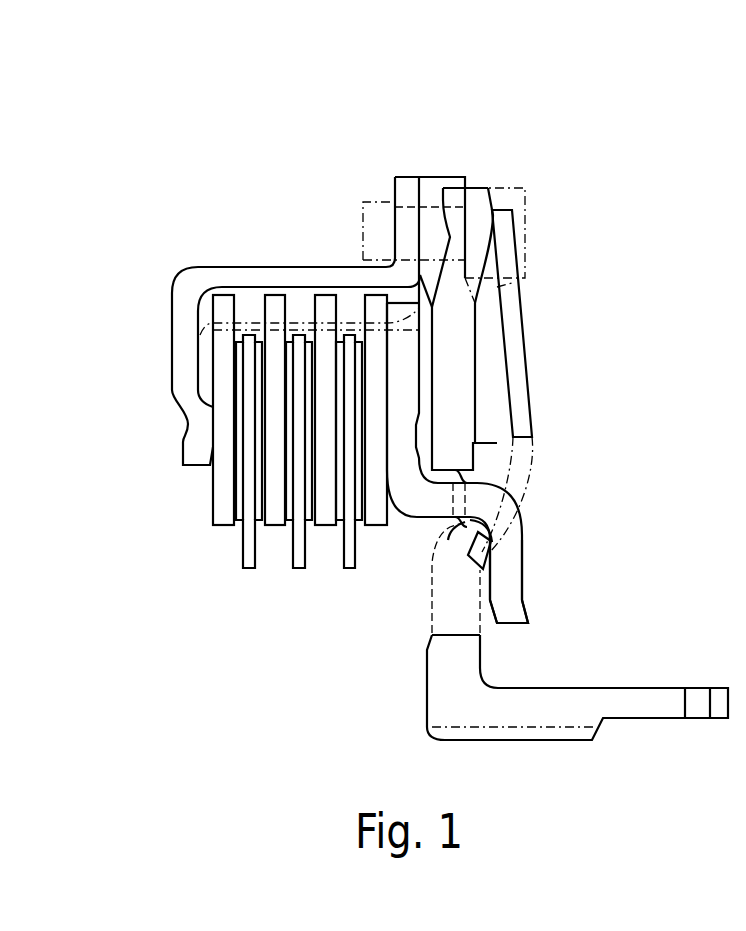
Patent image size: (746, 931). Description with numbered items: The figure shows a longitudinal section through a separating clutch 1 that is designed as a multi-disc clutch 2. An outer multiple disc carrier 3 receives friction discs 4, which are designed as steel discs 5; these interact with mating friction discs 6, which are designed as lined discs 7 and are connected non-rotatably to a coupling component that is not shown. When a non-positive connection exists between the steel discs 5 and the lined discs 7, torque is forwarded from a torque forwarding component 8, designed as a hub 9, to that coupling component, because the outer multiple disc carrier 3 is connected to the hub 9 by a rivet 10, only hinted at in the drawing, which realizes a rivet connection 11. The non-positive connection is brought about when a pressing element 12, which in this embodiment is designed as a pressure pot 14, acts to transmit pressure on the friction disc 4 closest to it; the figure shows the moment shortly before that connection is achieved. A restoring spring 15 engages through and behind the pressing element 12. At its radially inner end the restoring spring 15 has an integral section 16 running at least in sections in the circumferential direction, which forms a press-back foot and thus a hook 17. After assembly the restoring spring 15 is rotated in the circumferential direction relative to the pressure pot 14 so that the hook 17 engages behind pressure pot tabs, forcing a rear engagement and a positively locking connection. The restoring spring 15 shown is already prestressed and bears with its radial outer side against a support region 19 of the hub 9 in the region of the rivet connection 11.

The separating clutch 1 is at (523, 116).
The multi-disc clutch 2 is at (580, 130).
The outer multiple disc carrier 3 is at (248, 277).
The friction discs 4 is at (257, 472).
The steel discs 5 is at (222, 474).
The mating friction discs 6 is at (265, 511).
The lined discs 7 is at (243, 557).
The torque forwarding component 8 is at (530, 618).
The hub 9 is at (437, 708).
The rivet 10 is at (378, 212).
The rivet connection 11 is at (404, 168).
The pressing element 12 is at (580, 582).
The pressure pot 14 is at (512, 597).
The restoring spring 15 is at (517, 392).
The integral section 16 is at (562, 524).
The hook 17 is at (488, 545).
The support region 19 is at (492, 195).